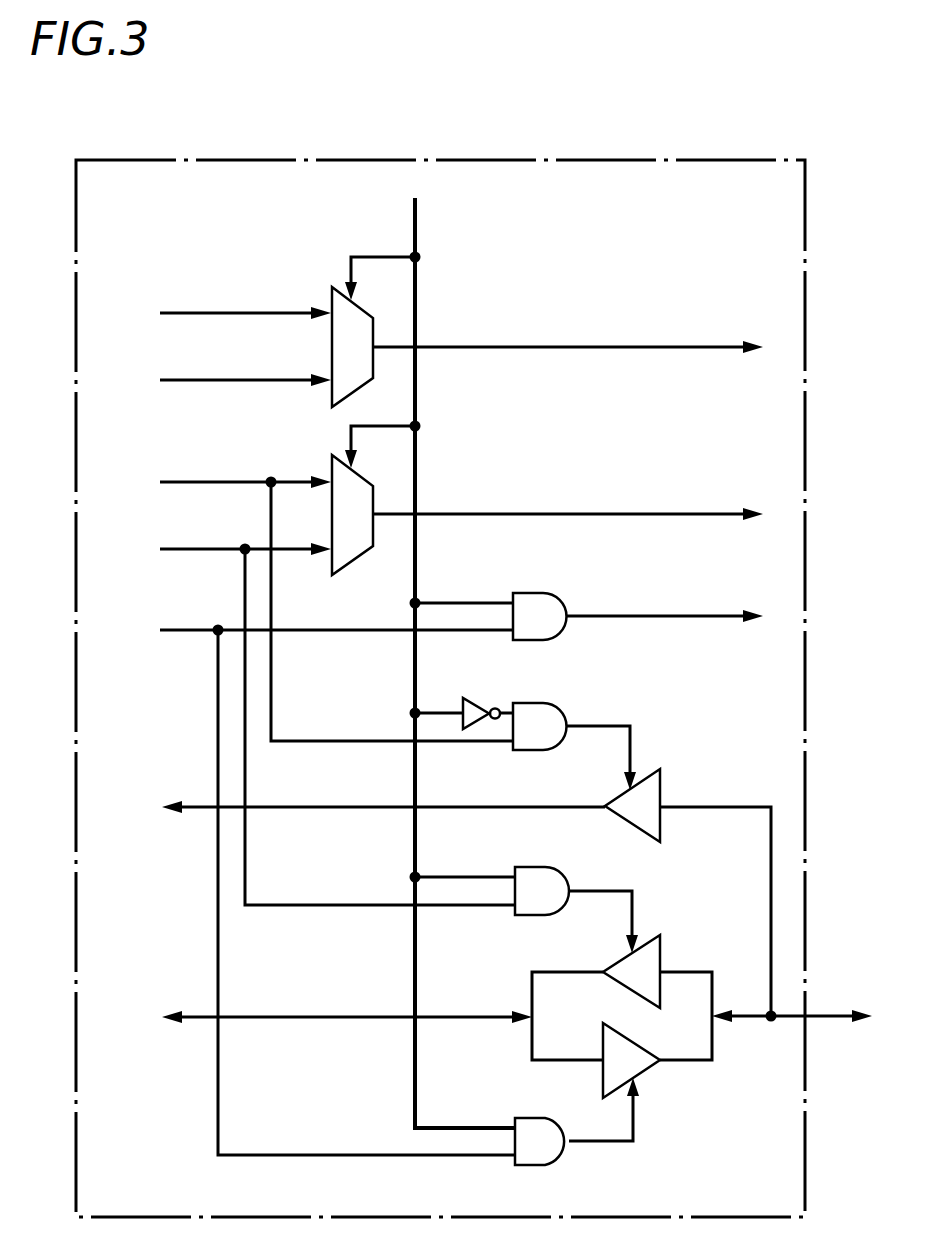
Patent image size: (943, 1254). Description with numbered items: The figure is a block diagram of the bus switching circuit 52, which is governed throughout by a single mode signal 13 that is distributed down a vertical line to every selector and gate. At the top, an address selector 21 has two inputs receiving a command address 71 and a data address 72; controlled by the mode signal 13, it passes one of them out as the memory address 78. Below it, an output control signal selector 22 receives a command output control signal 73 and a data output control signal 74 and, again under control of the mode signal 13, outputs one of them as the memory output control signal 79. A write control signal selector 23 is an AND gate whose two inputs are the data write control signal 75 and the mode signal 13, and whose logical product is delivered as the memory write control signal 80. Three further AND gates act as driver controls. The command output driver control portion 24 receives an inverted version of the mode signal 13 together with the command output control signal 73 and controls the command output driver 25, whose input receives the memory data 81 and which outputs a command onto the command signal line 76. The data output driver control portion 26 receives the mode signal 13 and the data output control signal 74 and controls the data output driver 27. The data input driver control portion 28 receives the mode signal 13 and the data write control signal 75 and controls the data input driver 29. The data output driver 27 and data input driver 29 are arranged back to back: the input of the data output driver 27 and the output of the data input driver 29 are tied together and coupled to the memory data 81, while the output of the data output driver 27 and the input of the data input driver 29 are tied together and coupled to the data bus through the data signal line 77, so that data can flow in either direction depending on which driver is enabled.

The mode signal 13 is at (418, 224).
The address selector 21 is at (332, 296).
The output control signal selector 22 is at (332, 464).
The write control signal selector 23 is at (543, 593).
The command output driver control portion 24 is at (543, 703).
The command output driver 25 is at (661, 783).
The data output driver control portion 26 is at (545, 867).
The data output driver 27 is at (661, 948).
The data input driver control portion 28 is at (551, 1165).
The data input driver 29 is at (603, 1083).
The bus switching circuit 52 is at (747, 160).
The command address 71 is at (201, 313).
The data address 72 is at (201, 380).
The command output control signal 73 is at (201, 482).
The data output control signal 74 is at (201, 549).
The data write control signal 75 is at (201, 630).
The command signal line 76 is at (196, 806).
The data signal line 77 is at (197, 1015).
The memory address 78 is at (690, 345).
The memory output control signal 79 is at (690, 512).
The memory write control signal 80 is at (692, 614).
The memory data 81 is at (828, 1013).